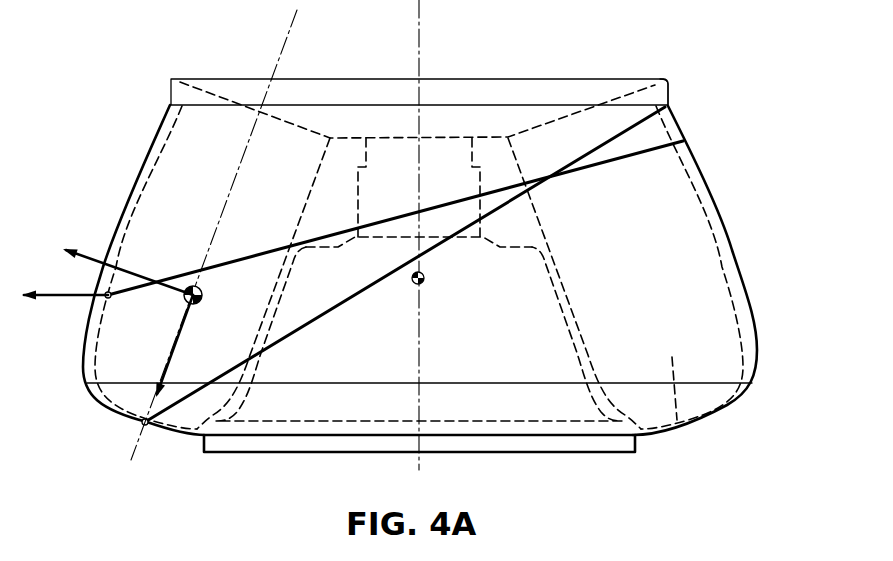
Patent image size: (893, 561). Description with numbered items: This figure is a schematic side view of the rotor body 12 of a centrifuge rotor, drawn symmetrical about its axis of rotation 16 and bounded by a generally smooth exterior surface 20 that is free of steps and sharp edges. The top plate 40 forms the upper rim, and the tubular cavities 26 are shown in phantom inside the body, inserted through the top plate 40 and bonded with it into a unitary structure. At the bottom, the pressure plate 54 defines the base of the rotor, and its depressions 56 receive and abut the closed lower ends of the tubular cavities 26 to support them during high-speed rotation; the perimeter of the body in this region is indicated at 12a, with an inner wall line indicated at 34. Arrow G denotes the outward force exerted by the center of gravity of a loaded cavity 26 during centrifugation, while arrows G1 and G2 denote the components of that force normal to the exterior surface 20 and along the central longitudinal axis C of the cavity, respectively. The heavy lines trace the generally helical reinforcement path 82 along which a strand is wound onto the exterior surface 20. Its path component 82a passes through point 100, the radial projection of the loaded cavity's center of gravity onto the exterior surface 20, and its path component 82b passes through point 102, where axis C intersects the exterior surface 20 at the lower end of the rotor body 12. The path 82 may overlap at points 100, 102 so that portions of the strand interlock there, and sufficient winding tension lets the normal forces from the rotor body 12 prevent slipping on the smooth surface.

The rotor body 12 is at (157, 124).
The perimeter edge of club head 12a is at (654, 80).
The axis of rotation 16 is at (420, 22).
The exterior surface 20 is at (692, 273).
The tubular cavities 26 is at (290, 135).
The inner wall surface 34 is at (148, 177).
The top plate 40 is at (666, 93).
The pressure plate 54 is at (497, 453).
The depressions 56 is at (670, 357).
The helical reinforcement path 82 is at (316, 320).
The path component 82a is at (376, 220).
The path component 82b is at (424, 256).
The point 100 is at (105, 293).
The point 102 is at (143, 424).
The central longitudinal axis C is at (275, 65).
The outward force G is at (65, 314).
The force component normal to exterior surface G1 is at (88, 256).
The force component along cavity axis G2 is at (176, 344).